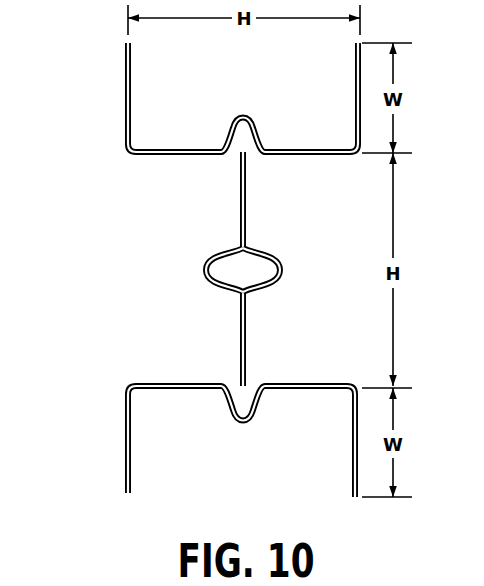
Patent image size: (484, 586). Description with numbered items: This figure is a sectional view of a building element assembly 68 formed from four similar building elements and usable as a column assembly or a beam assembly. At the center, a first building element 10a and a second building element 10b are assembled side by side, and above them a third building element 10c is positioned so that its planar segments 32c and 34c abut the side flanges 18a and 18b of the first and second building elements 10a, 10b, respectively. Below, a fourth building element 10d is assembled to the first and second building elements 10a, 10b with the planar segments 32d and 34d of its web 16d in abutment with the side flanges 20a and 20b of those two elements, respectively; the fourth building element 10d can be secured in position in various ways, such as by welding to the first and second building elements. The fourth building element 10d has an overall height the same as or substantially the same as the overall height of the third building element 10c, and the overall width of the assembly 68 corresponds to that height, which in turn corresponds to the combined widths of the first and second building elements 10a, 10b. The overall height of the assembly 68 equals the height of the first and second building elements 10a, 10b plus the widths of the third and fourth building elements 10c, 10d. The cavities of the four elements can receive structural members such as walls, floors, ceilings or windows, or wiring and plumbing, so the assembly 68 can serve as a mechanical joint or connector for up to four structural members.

The building element assembly 68 is at (97, 38).
The third building element 10c is at (112, 69).
The fourth building element 10d is at (344, 473).
The first building element 10a is at (230, 209).
The second building element 10b is at (297, 268).
The planar segment 32c is at (183, 149).
The planar segment 34c is at (302, 149).
The side flange 18a is at (139, 165).
The side flange 18b is at (321, 166).
The side flange 20a is at (157, 374).
The side flange 20b is at (303, 374).
The planar segment 32d is at (175, 392).
The planar segment 34d is at (296, 392).
The web 16d is at (218, 411).